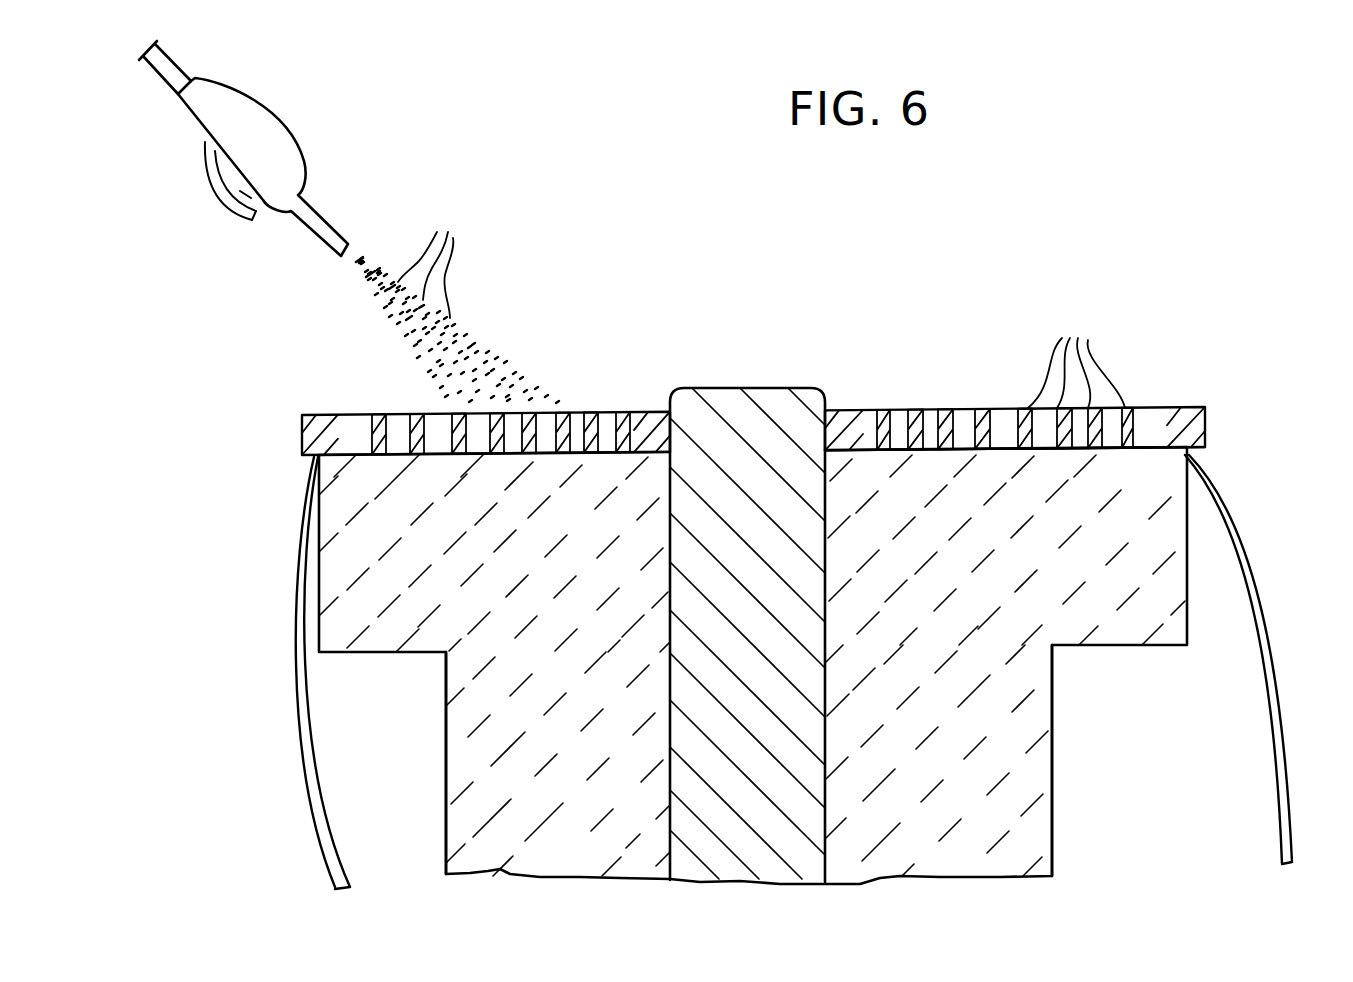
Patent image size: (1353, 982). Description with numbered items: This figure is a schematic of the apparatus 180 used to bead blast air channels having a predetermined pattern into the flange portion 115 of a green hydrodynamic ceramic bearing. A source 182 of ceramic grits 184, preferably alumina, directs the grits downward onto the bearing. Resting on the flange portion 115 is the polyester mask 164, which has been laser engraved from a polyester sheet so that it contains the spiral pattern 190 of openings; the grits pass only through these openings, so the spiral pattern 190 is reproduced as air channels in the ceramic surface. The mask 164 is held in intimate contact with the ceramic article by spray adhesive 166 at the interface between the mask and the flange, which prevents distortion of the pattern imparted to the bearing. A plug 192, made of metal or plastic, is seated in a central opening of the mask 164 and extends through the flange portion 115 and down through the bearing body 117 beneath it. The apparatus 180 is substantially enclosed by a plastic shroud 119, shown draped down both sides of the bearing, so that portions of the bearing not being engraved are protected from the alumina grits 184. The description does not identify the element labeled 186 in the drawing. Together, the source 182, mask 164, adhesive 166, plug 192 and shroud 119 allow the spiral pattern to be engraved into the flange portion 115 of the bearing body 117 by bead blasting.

The apparatus for bead blasting 180 is at (1192, 306).
The source of ceramic grits 182 is at (263, 125).
The ceramic grits 184 is at (457, 301).
The polyester mask 164 is at (1205, 425).
The coating segment 186 is at (1152, 408).
The spiral pattern 190 is at (1076, 356).
The plug 192 is at (778, 400).
The flange portion 115 is at (327, 488).
The bearing body 117 is at (465, 766).
The spray adhesive 166 is at (1127, 452).
The plastic shroud 119 is at (295, 662).